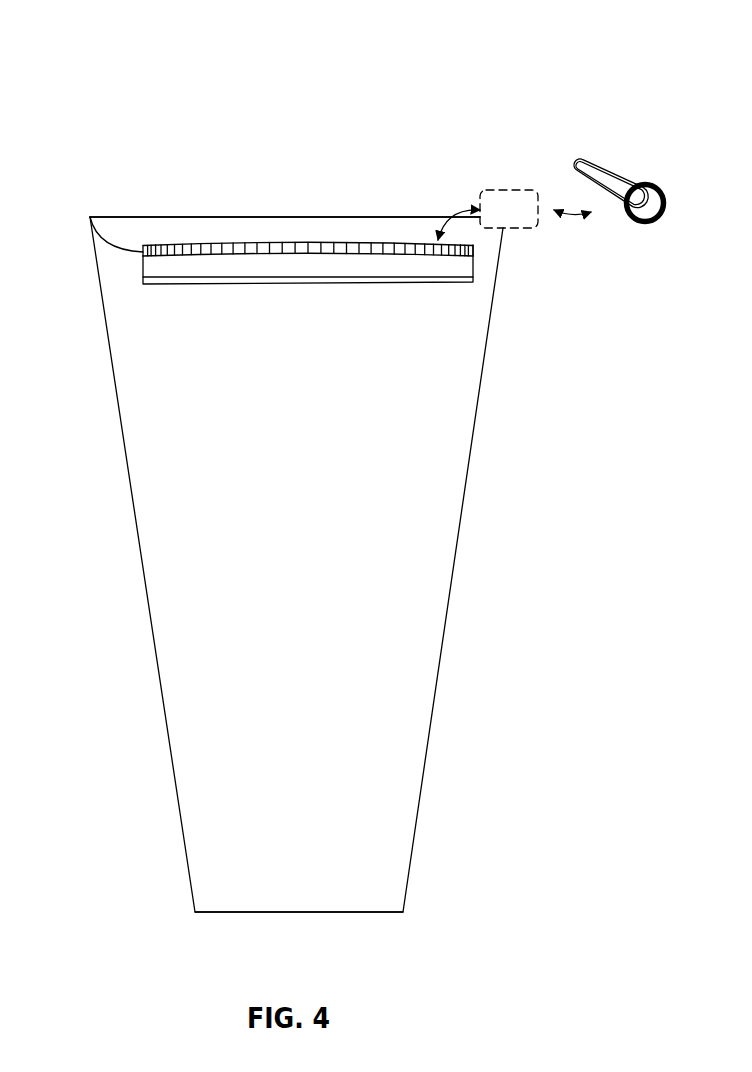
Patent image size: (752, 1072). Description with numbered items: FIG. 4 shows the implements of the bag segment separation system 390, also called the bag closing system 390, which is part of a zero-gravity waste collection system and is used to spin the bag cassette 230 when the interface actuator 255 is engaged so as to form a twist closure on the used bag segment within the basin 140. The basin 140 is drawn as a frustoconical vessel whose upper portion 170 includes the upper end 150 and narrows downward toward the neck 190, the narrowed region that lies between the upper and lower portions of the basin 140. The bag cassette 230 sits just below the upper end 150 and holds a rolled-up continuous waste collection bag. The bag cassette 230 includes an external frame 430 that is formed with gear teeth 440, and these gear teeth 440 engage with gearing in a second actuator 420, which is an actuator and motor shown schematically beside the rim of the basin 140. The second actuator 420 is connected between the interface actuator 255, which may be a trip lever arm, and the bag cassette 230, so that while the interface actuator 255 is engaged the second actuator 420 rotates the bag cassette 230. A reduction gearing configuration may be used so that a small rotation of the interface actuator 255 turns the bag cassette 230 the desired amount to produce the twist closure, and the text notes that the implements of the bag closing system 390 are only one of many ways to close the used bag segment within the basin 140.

The bag segment separation system 390 is at (584, 61).
The basin 140 is at (171, 752).
The upper end 150 is at (192, 217).
The upper portion 170 is at (172, 508).
The neck 190 is at (298, 912).
The bag cassette 230 is at (168, 292).
The interface actuator 255 is at (648, 222).
The second actuator 420 is at (510, 190).
The external frame 430 is at (90, 217).
The gear teeth 440 is at (265, 244).